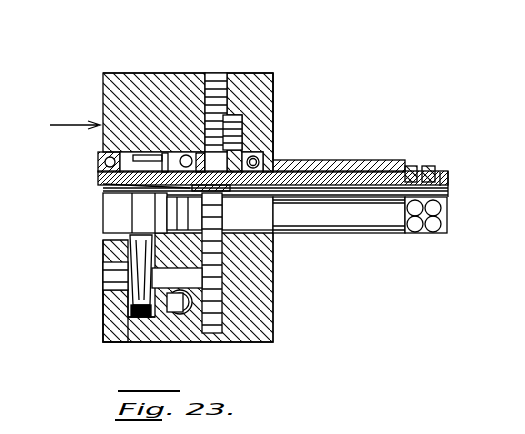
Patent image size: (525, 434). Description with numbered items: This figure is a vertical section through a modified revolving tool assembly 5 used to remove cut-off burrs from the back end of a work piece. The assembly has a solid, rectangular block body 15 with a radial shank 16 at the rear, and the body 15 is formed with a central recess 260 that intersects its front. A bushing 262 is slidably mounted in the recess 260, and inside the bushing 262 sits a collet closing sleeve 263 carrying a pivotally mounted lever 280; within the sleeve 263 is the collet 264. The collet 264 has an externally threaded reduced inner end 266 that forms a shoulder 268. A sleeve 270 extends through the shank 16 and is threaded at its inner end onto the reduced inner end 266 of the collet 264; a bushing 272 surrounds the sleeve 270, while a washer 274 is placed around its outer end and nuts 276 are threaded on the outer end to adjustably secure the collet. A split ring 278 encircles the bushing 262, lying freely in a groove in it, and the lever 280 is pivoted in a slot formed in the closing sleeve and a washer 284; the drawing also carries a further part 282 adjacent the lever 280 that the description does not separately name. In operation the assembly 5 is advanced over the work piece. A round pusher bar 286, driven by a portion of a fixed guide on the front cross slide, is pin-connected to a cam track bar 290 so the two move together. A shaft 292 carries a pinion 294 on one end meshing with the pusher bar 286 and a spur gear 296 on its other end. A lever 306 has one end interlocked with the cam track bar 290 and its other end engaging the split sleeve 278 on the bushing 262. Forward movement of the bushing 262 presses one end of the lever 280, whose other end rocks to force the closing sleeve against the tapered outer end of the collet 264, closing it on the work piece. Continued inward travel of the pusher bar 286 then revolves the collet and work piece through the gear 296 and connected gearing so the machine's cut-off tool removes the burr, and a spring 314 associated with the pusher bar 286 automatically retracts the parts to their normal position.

The central recess 260 is at (222, 165).
The lever 280 is at (122, 152).
The splined sleeve 282 is at (199, 152).
The washer 284 is at (208, 165).
The body 15 is at (274, 104).
The collet closing sleeve 263 is at (100, 158).
The externally threaded reduced inner end 266 is at (258, 160).
The radial shank 16 is at (357, 162).
The collet 264 is at (100, 177).
The sleeve 270 is at (388, 178).
The nuts 276 is at (432, 168).
The bushing 272 is at (327, 178).
The shoulder 268 is at (100, 188).
The bushing 262 is at (100, 210).
The washer 274 is at (409, 236).
The shaft 292 is at (204, 332).
The split ring 278 is at (135, 238).
The lever 306 is at (145, 320).
The spring 314 is at (153, 325).
The pinion 294 is at (115, 280).
The spur gear 296 is at (204, 288).
The cam track bar 290 is at (183, 318).
The pusher bar 286 is at (118, 320).
The revolving tool assembly 5 is at (61, 124).